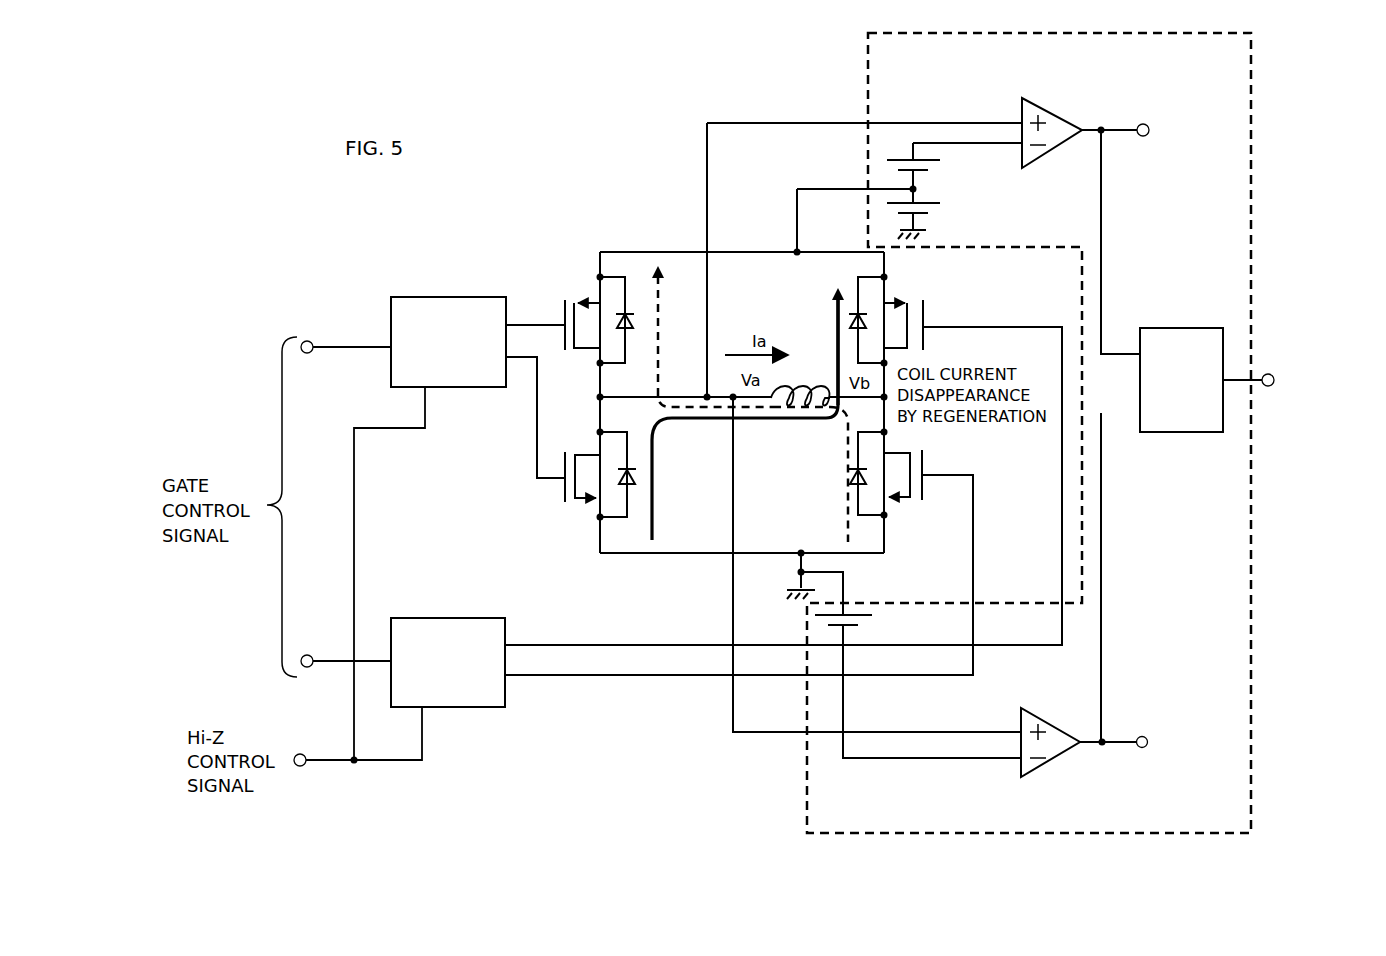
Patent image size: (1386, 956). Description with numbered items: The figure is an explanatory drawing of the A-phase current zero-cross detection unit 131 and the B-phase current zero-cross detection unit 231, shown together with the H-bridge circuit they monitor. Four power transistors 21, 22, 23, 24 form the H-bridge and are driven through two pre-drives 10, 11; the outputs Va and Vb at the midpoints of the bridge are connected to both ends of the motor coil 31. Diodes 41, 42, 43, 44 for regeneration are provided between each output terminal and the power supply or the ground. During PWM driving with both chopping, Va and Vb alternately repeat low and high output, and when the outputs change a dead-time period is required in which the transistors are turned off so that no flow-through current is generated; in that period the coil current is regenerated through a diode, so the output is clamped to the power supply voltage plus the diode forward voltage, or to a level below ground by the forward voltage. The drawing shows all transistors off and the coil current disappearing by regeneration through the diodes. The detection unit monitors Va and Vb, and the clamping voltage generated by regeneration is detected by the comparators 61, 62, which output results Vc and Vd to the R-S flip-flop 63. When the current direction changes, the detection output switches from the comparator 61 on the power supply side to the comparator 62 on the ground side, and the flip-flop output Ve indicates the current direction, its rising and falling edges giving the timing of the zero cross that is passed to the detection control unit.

The pre-drive 10 is at (408, 297).
The pre-drive 11 is at (416, 618).
The power transistor 21 is at (565, 490).
The power transistor 22 is at (928, 468).
The power transistor 23 is at (562, 314).
The power transistor 24 is at (928, 312).
The motor coil 31 is at (813, 418).
The diode for regeneration 41 is at (636, 478).
The diode for regeneration 42 is at (852, 478).
The diode for regeneration 43 is at (712, 336).
The diode for regeneration 44 is at (850, 317).
The comparator 61 is at (1034, 102).
The comparator 62 is at (1029, 713).
The R-S flip-flop 63 is at (1168, 328).
The A-phase current zero-cross detection unit 131 is at (1077, 433).
The B-phase current zero-cross detection unit 231 is at (1251, 505).